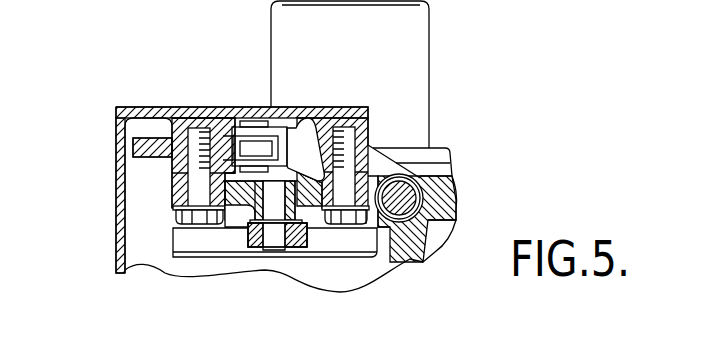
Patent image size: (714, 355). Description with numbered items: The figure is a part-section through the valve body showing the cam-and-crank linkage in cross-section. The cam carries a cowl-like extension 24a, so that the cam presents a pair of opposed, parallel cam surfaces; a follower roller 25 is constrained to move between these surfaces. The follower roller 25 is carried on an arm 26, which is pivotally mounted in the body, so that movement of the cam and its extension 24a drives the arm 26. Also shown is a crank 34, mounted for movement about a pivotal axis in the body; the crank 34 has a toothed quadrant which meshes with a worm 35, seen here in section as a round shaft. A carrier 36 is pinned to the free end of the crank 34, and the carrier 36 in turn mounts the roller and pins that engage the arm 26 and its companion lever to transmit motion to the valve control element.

The cowl-like extension 24a is at (348, 240).
The follower roller 25 is at (293, 242).
The arm 26 is at (243, 192).
The crank 34 is at (295, 155).
The worm 35 is at (405, 200).
The carrier 36 is at (134, 144).